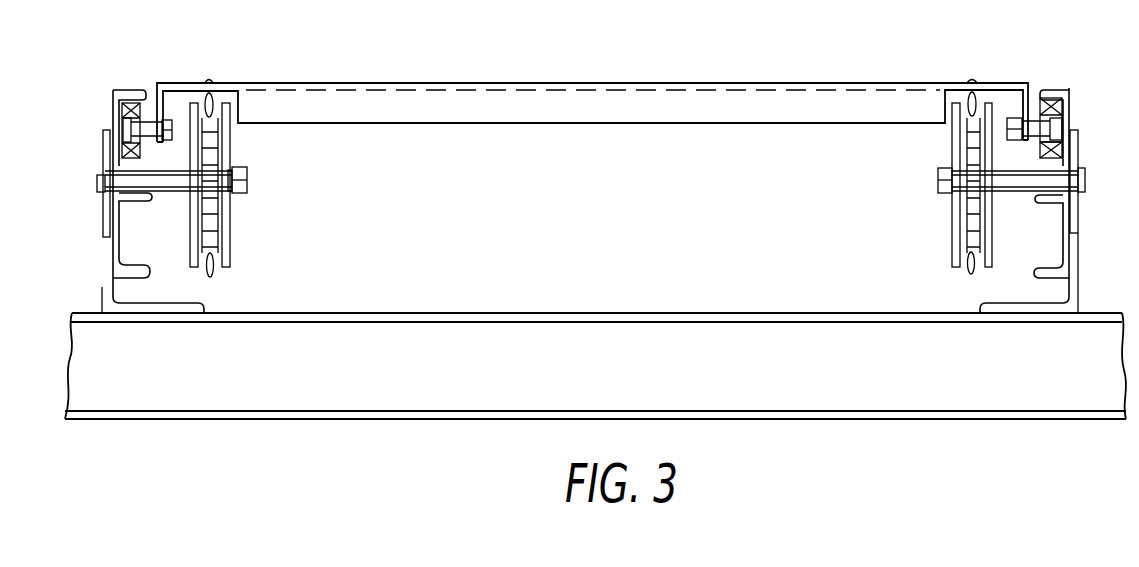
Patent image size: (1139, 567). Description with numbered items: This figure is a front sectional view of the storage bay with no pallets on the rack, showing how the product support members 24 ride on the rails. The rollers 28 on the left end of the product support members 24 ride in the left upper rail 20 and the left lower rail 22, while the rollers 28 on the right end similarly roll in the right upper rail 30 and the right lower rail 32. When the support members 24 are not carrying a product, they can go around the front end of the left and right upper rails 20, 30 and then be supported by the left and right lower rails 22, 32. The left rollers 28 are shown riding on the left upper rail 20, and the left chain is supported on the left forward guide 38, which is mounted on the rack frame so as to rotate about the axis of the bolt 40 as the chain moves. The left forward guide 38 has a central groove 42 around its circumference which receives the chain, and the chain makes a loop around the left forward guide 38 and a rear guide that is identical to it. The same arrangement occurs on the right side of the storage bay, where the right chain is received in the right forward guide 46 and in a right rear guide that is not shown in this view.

The left upper rail 20 is at (147, 167).
The left lower rail 22 is at (138, 272).
The product support member 24 is at (692, 90).
The roller 28 is at (125, 147).
The right upper rail 30 is at (1043, 165).
The right lower rail 32 is at (1042, 271).
The left forward guide 38 is at (230, 248).
The bolt 40 is at (247, 183).
The central groove 42 is at (212, 112).
The right forward guide 46 is at (952, 253).